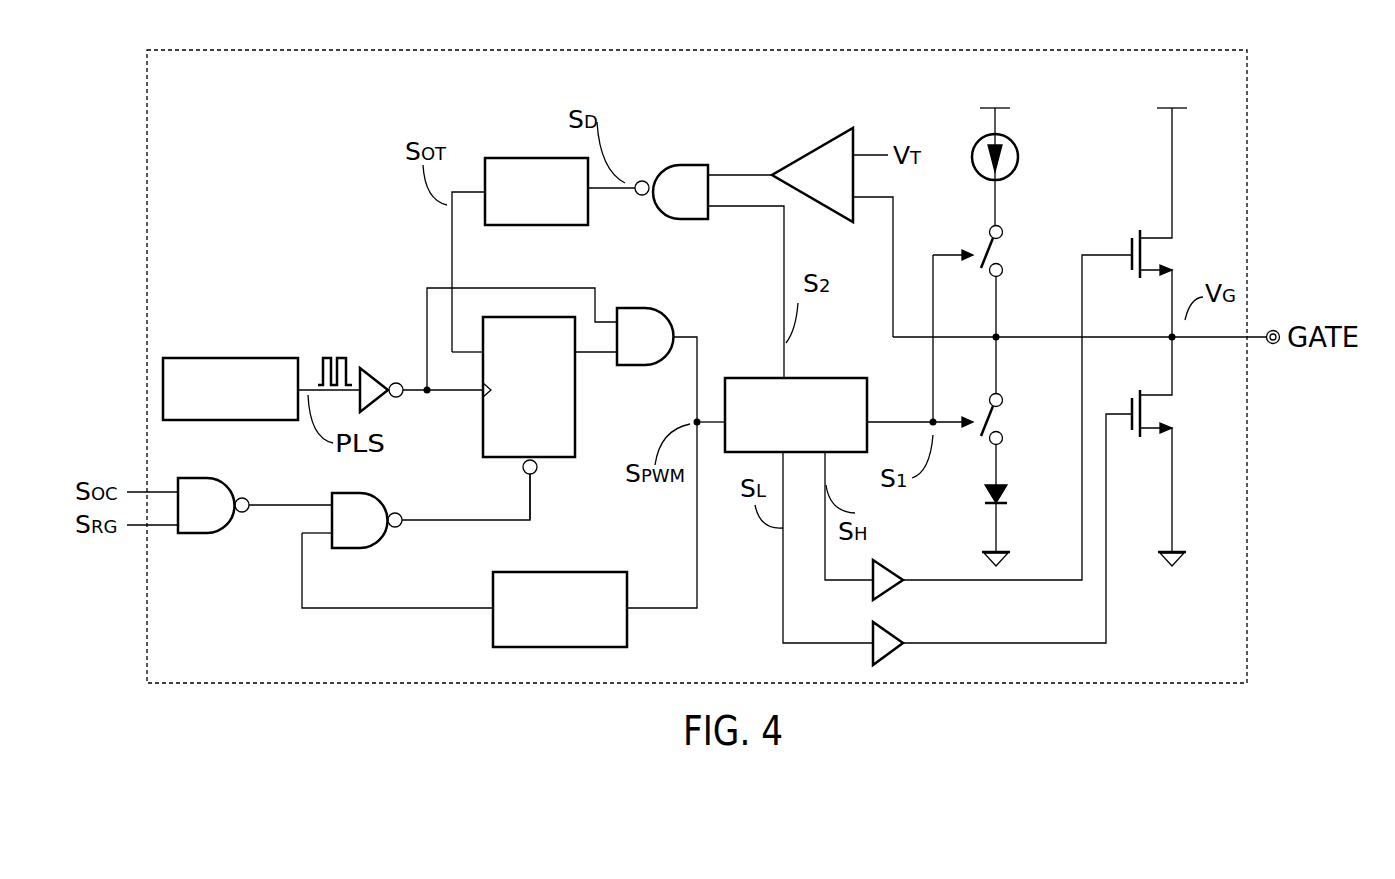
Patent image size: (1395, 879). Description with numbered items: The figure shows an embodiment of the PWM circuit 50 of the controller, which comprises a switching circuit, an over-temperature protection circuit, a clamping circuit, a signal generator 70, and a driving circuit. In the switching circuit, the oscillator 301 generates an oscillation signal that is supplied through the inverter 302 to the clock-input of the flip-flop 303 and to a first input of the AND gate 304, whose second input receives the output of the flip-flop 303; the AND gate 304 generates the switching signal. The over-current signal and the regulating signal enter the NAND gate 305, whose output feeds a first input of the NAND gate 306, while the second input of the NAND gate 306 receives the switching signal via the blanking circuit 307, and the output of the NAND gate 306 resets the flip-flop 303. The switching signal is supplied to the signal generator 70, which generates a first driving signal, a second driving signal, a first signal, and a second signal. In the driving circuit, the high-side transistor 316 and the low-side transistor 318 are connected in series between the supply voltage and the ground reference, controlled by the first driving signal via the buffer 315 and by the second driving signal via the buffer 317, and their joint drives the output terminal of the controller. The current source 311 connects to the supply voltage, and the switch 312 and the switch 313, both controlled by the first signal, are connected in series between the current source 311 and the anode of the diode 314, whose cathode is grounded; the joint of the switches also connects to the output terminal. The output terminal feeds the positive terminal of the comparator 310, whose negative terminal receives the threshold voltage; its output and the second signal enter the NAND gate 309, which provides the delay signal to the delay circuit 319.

The PWM circuit 50 is at (1198, 50).
The oscillator 301 is at (210, 358).
The inverter 302 is at (380, 405).
The flip-flop 303 is at (578, 383).
The AND gate 304 is at (643, 308).
The NAND gate 305 is at (195, 535).
The NAND gate 306 is at (357, 548).
The blanking circuit 307 is at (560, 572).
The NAND gate 309 is at (676, 163).
The comparator 310 is at (800, 150).
The current source 311 is at (1018, 157).
The switch 312 is at (1010, 250).
The switch 313 is at (1010, 420).
The diode 314 is at (1010, 495).
The buffer 315 is at (890, 565).
The transistor 316 is at (1180, 256).
The buffer 317 is at (890, 630).
The transistor 318 is at (1180, 417).
The delay circuit 319 is at (528, 225).
The signal generator 70 is at (828, 378).